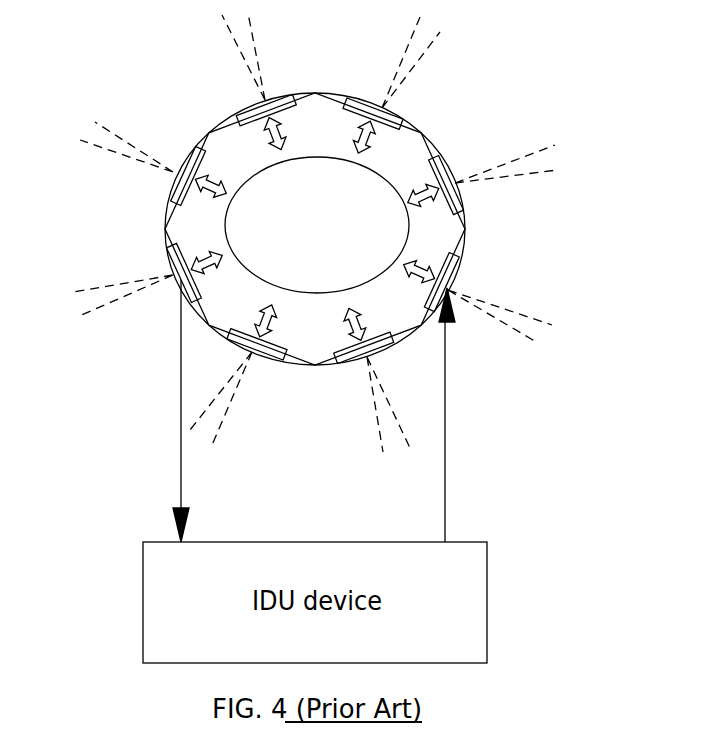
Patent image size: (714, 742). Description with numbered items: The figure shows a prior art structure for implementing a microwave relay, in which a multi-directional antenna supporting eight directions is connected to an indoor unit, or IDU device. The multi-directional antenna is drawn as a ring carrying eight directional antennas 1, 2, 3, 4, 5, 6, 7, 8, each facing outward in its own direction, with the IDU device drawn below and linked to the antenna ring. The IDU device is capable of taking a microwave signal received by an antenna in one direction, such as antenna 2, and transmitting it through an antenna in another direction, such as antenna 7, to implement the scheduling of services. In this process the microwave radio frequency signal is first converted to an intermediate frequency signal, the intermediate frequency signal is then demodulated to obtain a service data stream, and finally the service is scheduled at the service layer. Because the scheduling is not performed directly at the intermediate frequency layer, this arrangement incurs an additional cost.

The antenna 1 is at (218, 375).
The antenna 2 is at (146, 273).
The antenna 3 is at (153, 154).
The antenna 4 is at (292, 81).
The antenna 5 is at (420, 85).
The antenna 6 is at (488, 196).
The antenna 7 is at (478, 327).
The antenna 8 is at (343, 381).